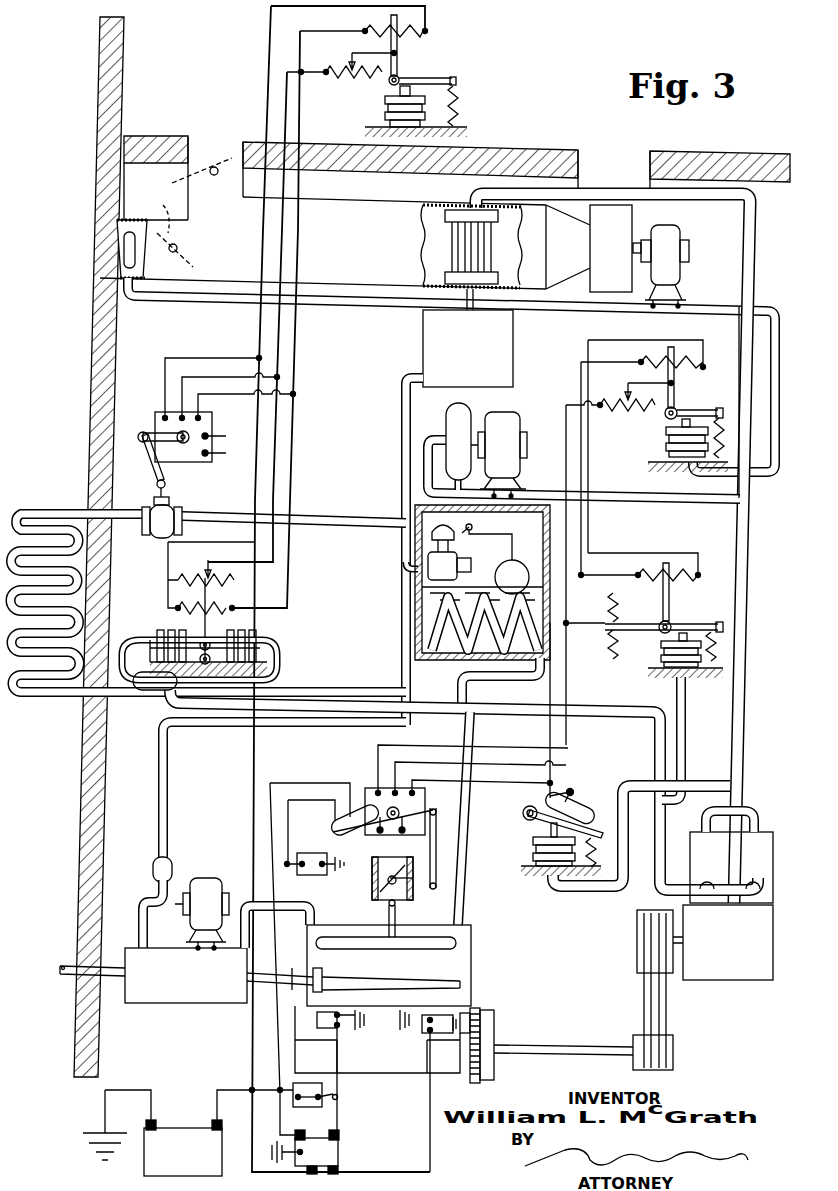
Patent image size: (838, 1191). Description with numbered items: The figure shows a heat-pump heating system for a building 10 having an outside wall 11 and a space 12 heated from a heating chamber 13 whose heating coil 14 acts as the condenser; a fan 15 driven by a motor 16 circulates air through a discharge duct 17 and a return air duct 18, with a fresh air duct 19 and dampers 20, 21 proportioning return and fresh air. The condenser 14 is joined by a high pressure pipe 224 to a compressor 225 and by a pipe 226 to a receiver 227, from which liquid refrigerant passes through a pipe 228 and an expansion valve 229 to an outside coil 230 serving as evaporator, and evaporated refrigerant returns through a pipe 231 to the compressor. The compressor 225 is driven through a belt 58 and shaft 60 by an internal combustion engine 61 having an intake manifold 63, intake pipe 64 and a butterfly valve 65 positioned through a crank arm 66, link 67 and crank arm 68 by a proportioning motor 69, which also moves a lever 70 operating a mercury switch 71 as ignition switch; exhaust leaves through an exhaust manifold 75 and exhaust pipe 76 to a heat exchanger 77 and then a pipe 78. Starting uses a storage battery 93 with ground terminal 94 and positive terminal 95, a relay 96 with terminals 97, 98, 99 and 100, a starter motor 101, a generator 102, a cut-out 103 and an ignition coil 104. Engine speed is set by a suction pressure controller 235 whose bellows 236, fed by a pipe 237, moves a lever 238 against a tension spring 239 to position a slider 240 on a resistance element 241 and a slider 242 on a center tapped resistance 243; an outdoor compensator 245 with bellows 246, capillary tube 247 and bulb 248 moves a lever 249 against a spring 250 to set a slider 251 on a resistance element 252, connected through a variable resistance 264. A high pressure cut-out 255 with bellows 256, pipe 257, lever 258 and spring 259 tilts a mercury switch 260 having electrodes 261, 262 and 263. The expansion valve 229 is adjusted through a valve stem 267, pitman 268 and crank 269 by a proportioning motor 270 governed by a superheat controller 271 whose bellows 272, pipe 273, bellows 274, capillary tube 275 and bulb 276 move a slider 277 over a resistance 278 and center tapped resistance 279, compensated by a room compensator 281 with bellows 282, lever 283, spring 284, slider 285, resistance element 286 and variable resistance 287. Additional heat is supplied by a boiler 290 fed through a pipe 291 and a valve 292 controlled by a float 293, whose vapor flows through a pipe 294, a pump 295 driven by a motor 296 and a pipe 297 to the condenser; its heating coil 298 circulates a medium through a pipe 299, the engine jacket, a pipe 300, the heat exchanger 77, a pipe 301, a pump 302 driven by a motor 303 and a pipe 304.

The building 10 is at (80, 107).
The outside wall 11 is at (100, 180).
The space to be heated 12 is at (200, 77).
The heating chamber 13 is at (354, 207).
The heating coil 14 is at (500, 258).
The fan 15 is at (622, 256).
The motor 16 is at (678, 236).
The discharge duct 17 is at (604, 160).
The return air duct 18 is at (205, 150).
The duct 19 is at (117, 224).
The damper 20 is at (188, 179).
The damper 21 is at (163, 213).
The belt 58 is at (660, 1002).
The shaft 60 is at (556, 1046).
The internal combustion engine 61 is at (395, 972).
The intake manifold 63 is at (420, 950).
The intake pipe 64 is at (385, 906).
The butterfly valve 65 is at (372, 882).
The crank arm 66 is at (413, 894).
The link 67 is at (434, 860).
The crank arm 68 is at (426, 804).
The proportioning motor 69 is at (404, 836).
The lever 70 is at (347, 830).
The mercury switch 71 is at (335, 818).
The exhaust manifold 75 is at (352, 980).
The exhaust pipe 76 is at (293, 968).
The heat exchanger 77 is at (195, 988).
The pipe 78 is at (59, 976).
The storage battery 93 is at (195, 1167).
The negative ground terminal 94 is at (155, 1124).
The positive terminal 95 is at (212, 1124).
The relay 96 is at (340, 1150).
The terminal 97 is at (297, 1134).
The terminal 98 is at (312, 1174).
The terminal 99 is at (333, 1174).
The terminal 100 is at (338, 1132).
The starter motor 101 is at (442, 1036).
The generator 102 is at (330, 1030).
The cut-out 103 is at (326, 1094).
The ignition coil 104 is at (323, 853).
The high pressure pipe 224 is at (757, 294).
The compressor 225 is at (746, 948).
The pipe 226 is at (474, 297).
The receiver 227 is at (483, 356).
The pipe 228 is at (402, 458).
The expansion valve 229 is at (172, 514).
The coil 230 is at (30, 492).
The pipe 231 is at (310, 702).
The suction pressure controller 235 is at (682, 684).
The bellows 236 is at (661, 661).
The pipe 237 is at (686, 796).
The lever 238 is at (690, 622).
The tension spring 239 is at (718, 650).
The slider 240 is at (660, 592).
The potentiometer resistance element 241 is at (648, 574).
The slider 242 is at (618, 640).
The center tapped resistance element 243 is at (618, 606).
The outdoor compensator 245 is at (656, 464).
The bellows 246 is at (666, 446).
The capillary tube 247 is at (162, 298).
The bulb 248 is at (124, 258).
The lever 249 is at (688, 410).
The tension spring 250 is at (722, 440).
The slider 251 is at (675, 380).
The potentiometer resistance element 252 is at (648, 362).
The high pressure cut-out 255 is at (540, 882).
The bellows 256 is at (533, 858).
The pipe 257 is at (688, 786).
The lever 258 is at (536, 820).
The tension spring 259 is at (598, 856).
The mercury switch 260 is at (606, 812).
The outer electrode 261 is at (548, 800).
The outer electrode 262 is at (602, 808).
The inner electrodes 263 is at (574, 792).
The variable resistance 264 is at (608, 406).
The valve stem 267 is at (166, 486).
The pitman 268 is at (152, 463).
The crank 269 is at (153, 433).
The proportioning motor 270 is at (212, 428).
The differential controller 271 is at (284, 640).
The bellows 272 is at (160, 628).
The pipe 273 is at (150, 638).
The bellows 274 is at (250, 632).
The capillary tube 275 is at (279, 661).
The bulb 276 is at (150, 692).
The slider 277 is at (205, 619).
The potentiometer resistance 278 is at (233, 606).
The center tapped resistance element 279 is at (200, 560).
The room temperature responsive compensator 281 is at (478, 84).
The bellows 282 is at (385, 109).
The lever 283 is at (416, 80).
The tension spring 284 is at (456, 100).
The slider 285 is at (399, 52).
The potentiometer resistance element 286 is at (356, 30).
The variable resistance 287 is at (350, 78).
The boiler 290 is at (414, 588).
The pipe 291 is at (401, 553).
The valve 292 is at (460, 555).
The float 293 is at (516, 562).
The pipe 294 is at (447, 446).
The pump 295 is at (461, 408).
The motor 296 is at (500, 416).
The pipe 297 is at (622, 505).
The heating coil 298 is at (418, 634).
The pipe 299 is at (468, 730).
The pipe 300 is at (290, 904).
The pipe 301 is at (136, 920).
The pump 302 is at (152, 866).
The motor 303 is at (210, 880).
The pipe 304 is at (252, 727).